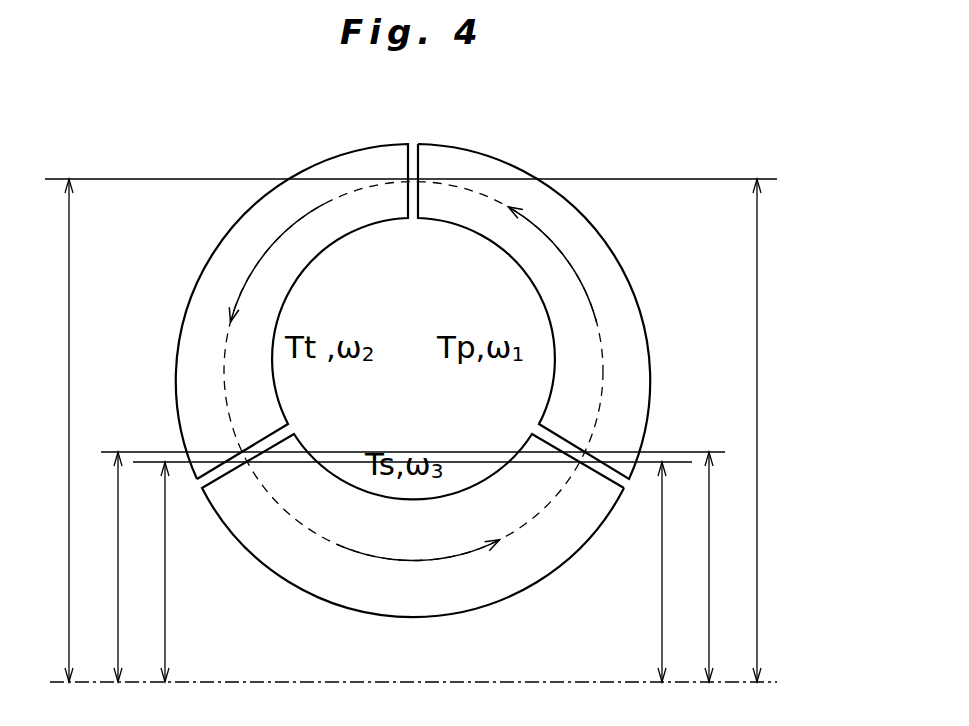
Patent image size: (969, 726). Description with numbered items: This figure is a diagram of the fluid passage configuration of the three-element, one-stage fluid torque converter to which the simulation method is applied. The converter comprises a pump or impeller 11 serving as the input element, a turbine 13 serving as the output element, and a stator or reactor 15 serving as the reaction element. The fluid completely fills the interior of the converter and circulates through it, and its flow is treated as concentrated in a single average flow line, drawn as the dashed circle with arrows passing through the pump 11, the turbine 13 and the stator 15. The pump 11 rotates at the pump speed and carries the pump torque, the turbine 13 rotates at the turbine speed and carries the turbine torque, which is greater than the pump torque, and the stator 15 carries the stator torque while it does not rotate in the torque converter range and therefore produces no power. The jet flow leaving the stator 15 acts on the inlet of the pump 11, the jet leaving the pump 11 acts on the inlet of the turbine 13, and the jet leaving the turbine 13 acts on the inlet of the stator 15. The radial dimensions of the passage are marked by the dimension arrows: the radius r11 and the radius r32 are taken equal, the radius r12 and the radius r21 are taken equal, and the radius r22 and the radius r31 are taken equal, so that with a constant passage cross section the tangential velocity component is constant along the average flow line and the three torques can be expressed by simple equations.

The pump 11 is at (630, 290).
The turbine 13 is at (205, 268).
The stator 15 is at (505, 602).
The radial dimension r11 is at (709, 597).
The radial dimension r12 is at (757, 483).
The radial dimension r21 is at (69, 343).
The radial dimension r22 is at (118, 618).
The radial dimension r31 is at (165, 575).
The radial dimension r32 is at (662, 582).